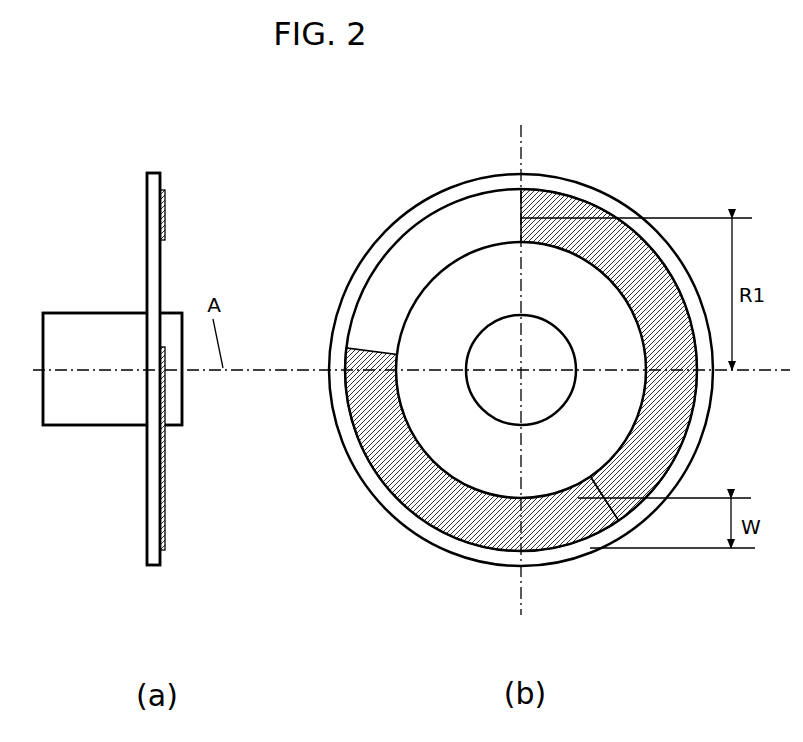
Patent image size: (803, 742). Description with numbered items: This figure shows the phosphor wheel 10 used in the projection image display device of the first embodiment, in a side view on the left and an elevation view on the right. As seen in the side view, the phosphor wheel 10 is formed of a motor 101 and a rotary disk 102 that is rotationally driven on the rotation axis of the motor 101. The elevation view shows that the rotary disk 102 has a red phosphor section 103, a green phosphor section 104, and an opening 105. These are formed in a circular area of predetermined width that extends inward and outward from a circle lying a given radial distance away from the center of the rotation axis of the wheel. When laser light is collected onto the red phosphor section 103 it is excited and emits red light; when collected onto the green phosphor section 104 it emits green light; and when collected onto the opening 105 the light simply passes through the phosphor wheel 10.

The phosphor wheel 10 is at (58, 197).
The motor 101 is at (83, 387).
The rotary disk 102 is at (153, 215).
The red phosphor section 103 is at (163, 218).
The green phosphor section 104 is at (165, 522).
The opening 105 is at (413, 240).